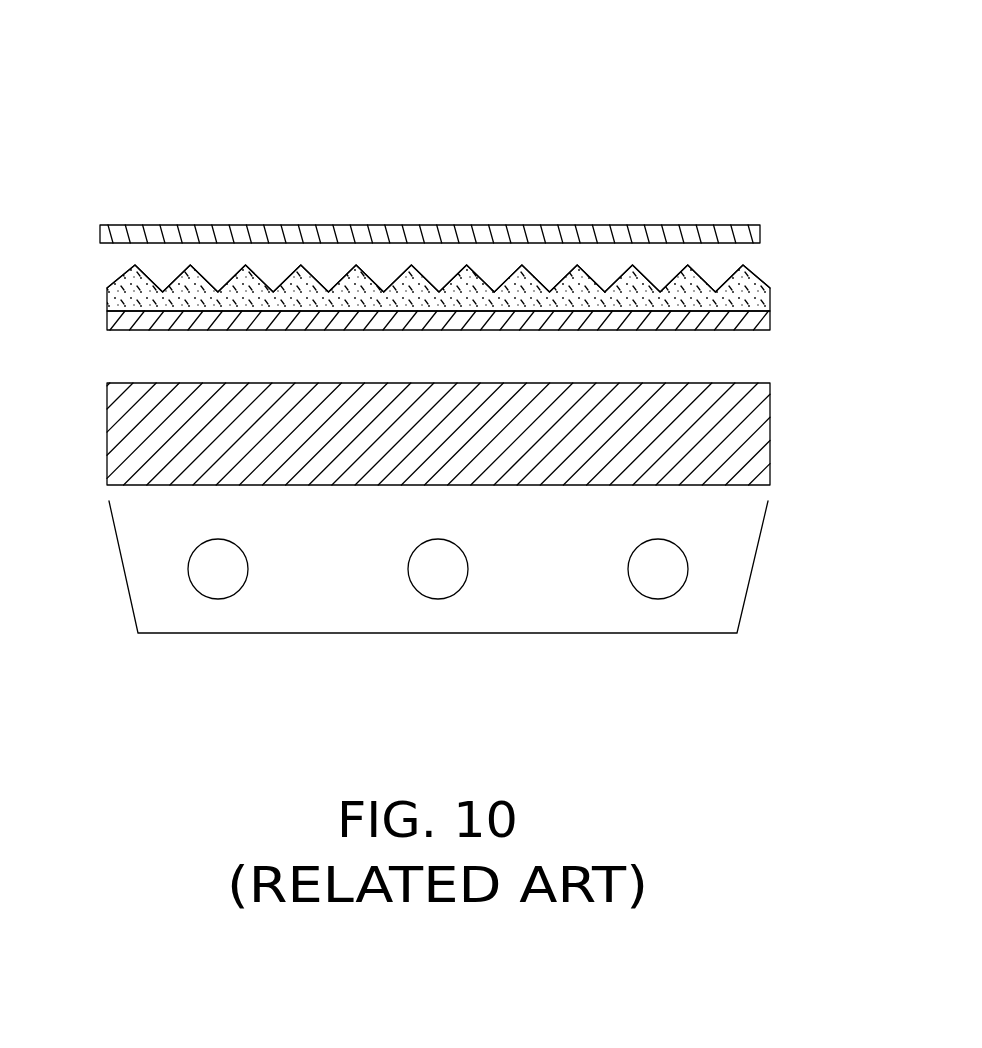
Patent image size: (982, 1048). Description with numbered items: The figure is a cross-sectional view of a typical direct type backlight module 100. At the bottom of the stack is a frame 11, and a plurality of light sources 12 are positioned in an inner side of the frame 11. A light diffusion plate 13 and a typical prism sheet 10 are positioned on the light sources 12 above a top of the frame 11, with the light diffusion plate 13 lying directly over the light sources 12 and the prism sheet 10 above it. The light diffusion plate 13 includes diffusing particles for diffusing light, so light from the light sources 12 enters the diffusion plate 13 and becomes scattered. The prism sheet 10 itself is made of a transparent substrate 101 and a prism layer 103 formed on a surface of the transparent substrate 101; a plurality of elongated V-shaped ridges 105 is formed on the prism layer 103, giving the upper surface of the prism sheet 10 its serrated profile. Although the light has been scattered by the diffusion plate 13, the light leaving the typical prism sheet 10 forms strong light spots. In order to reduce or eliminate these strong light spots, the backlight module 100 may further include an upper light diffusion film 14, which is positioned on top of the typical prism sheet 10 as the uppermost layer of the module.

The direct type backlight module 100 is at (363, 78).
The upper light diffusion film 14 is at (760, 226).
The prism sheet 10 is at (466, 296).
The prism layer 103 is at (444, 286).
The elongated V-shaped ridges 105 is at (132, 274).
The transparent substrate 101 is at (770, 318).
The light diffusion plate 13 is at (770, 432).
The frame 11 is at (486, 567).
The light sources 12 is at (667, 562).